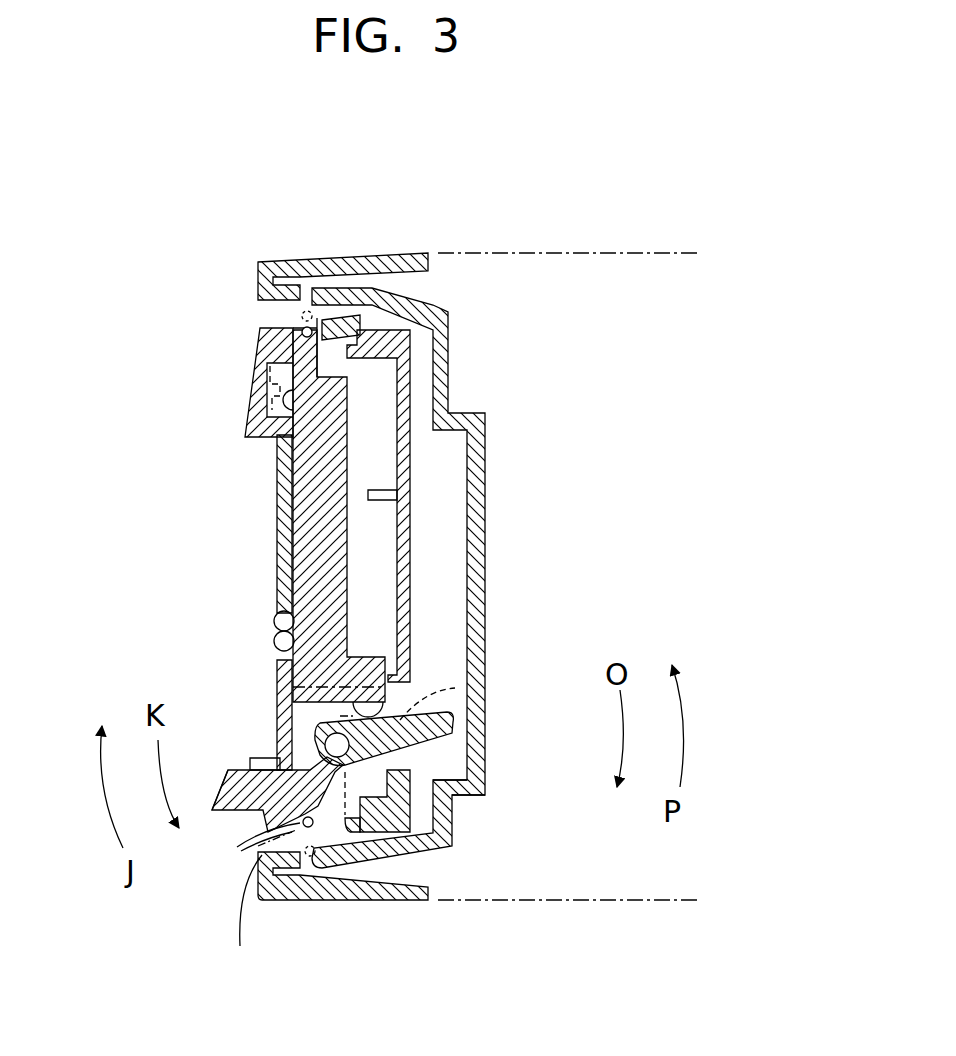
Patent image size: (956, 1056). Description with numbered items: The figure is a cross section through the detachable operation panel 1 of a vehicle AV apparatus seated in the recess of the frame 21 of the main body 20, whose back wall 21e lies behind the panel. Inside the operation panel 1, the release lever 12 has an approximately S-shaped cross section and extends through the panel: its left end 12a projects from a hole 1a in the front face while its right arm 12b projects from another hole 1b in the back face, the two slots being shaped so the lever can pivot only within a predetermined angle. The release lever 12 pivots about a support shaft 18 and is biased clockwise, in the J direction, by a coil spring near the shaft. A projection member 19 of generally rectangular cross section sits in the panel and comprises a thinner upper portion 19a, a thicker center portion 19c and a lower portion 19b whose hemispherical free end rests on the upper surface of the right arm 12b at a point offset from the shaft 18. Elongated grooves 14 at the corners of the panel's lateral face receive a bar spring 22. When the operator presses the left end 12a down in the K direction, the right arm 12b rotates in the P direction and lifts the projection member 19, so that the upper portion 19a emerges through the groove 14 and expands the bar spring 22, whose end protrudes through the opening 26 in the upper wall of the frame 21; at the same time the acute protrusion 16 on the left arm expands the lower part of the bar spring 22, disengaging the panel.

The operation panel 1 is at (313, 357).
The hole in front face of operation panel 1a is at (252, 858).
The hole in back face of operation panel 1b is at (486, 788).
The release lever 12 is at (237, 768).
The left end of release lever 12a is at (207, 806).
The right arm of release lever 12b is at (412, 740).
The elongated groove 14 is at (317, 321).
The acute protrusion 16 is at (237, 847).
The support shaft 18 is at (454, 728).
The projection member 19 is at (296, 627).
The upper portion of projection member 19a is at (306, 353).
The lower portion of projection member 19b is at (398, 698).
The center portion of projection member 19c is at (315, 496).
The main body 20 is at (609, 493).
The frame 21 is at (388, 252).
The back wall of frame recess 21e is at (455, 545).
The bar spring 22 is at (300, 327).
The opening in upper wall of frame 26 is at (305, 311).